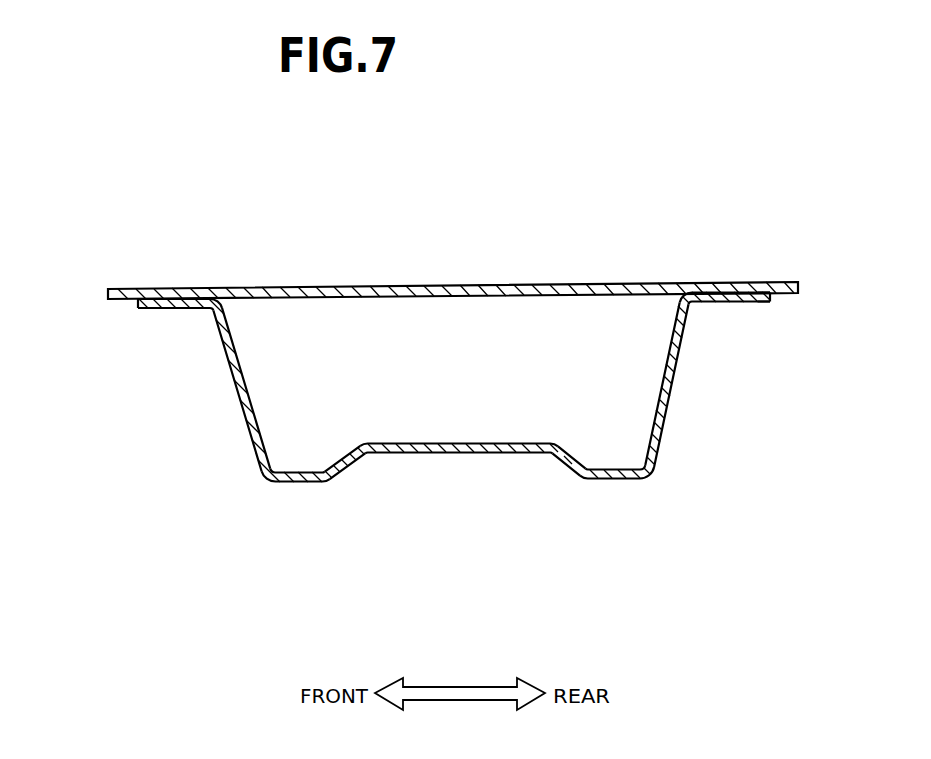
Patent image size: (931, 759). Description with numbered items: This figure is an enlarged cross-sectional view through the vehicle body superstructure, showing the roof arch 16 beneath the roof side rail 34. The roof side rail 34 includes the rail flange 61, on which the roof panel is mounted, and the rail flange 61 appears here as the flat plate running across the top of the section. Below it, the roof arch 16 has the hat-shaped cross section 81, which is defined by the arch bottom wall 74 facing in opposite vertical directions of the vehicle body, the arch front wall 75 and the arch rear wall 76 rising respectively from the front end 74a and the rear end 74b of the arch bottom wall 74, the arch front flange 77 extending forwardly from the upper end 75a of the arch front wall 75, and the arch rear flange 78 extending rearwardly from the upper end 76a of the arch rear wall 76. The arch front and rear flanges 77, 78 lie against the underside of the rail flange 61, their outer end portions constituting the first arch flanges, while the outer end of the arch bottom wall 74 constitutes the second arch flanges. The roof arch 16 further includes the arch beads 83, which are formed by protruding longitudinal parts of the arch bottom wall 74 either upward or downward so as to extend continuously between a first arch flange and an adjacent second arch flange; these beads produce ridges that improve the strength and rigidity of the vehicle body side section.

The roof side rail 34 is at (437, 218).
The rail flange 61 is at (473, 272).
The roof arch 16 is at (337, 518).
The arch rear flange 78 is at (138, 303).
The upper end of arch rear wall 76a is at (207, 310).
The arch rear wall 76 is at (235, 393).
The rear end of arch bottom wall 74b is at (260, 480).
The arch bead 83 is at (308, 482).
The arch bottom wall 74 is at (458, 454).
The hat-shaped cross section 81 is at (394, 482).
The front end of arch bottom wall 74a is at (655, 467).
The arch front wall 75 is at (673, 390).
The upper end of arch front wall 75a is at (695, 308).
The arch front flange 77 is at (773, 302).